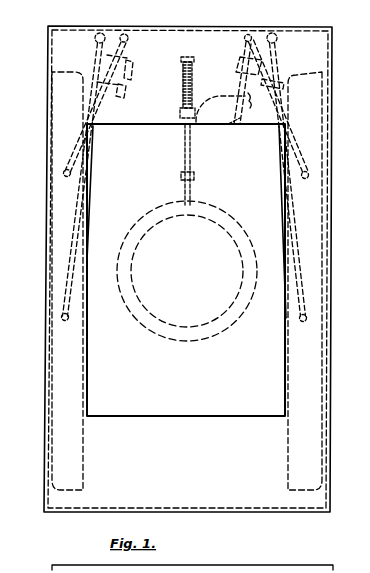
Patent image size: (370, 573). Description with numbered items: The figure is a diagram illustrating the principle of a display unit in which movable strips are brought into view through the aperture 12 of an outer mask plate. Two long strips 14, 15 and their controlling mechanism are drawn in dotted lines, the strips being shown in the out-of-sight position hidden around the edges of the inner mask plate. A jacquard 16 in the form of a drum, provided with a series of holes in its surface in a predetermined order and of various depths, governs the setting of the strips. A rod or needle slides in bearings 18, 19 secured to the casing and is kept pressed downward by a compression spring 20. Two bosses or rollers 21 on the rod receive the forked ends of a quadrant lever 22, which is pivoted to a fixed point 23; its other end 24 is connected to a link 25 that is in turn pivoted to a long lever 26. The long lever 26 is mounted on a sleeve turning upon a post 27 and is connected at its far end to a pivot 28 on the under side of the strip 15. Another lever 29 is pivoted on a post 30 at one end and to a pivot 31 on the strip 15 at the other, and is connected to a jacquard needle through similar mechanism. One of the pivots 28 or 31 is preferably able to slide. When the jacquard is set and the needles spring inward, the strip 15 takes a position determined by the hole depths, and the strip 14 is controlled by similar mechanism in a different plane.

The aperture 12 is at (172, 414).
The long strip 14 is at (80, 468).
The long strip 15 is at (292, 468).
The jacquard drum 16 is at (184, 338).
The bearing 18 is at (194, 176).
The bearing 19 is at (186, 57).
The compression spring 20 is at (193, 73).
The bosses or rollers 21 is at (180, 112).
The quadrant lever 22 is at (218, 122).
The fixed point 23 is at (236, 126).
The other end of quadrant lever 24 is at (255, 108).
The link 25 is at (268, 83).
The long lever 26 is at (299, 231).
The post 27 is at (276, 36).
The pivot 28 is at (307, 317).
The lever 29 is at (297, 146).
The post 30 is at (254, 22).
The pivot 31 is at (309, 176).